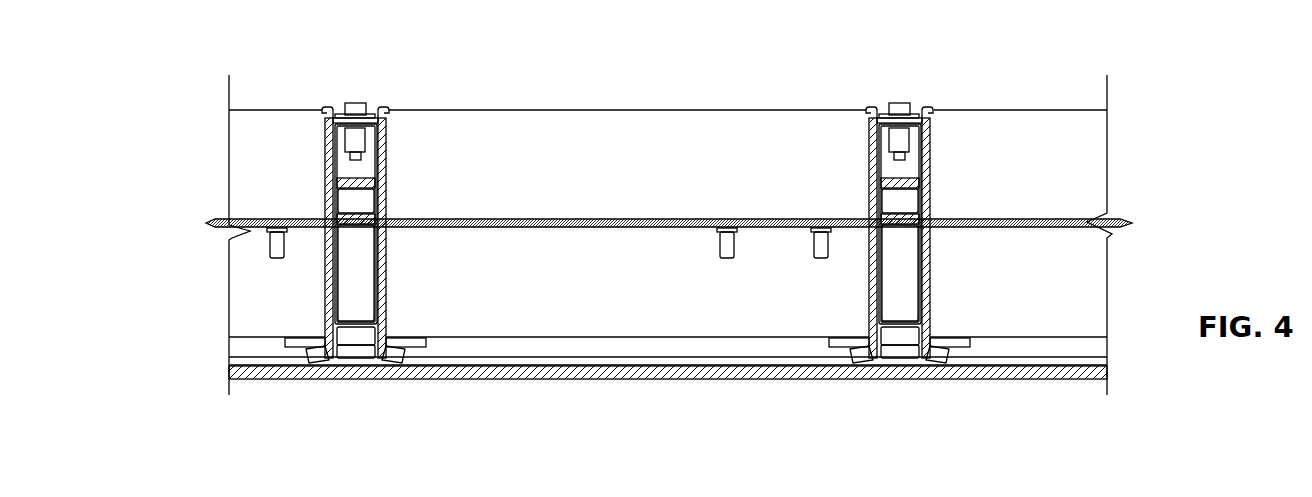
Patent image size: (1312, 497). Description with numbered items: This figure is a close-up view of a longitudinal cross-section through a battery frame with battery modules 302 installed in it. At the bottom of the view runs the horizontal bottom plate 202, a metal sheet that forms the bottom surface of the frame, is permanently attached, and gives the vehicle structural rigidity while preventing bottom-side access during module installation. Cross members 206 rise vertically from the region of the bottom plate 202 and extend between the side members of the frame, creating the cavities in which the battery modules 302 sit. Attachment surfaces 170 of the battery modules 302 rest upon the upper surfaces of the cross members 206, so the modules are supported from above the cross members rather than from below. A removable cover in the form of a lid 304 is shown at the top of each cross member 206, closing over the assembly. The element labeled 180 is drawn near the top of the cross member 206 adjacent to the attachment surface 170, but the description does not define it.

The attachment surface 170 is at (383, 108).
The bracket 180 is at (330, 107).
The bottom plate 202 is at (1067, 381).
The cross member 206 is at (388, 214).
The battery module 302 is at (292, 175).
The lid 304 is at (357, 103).